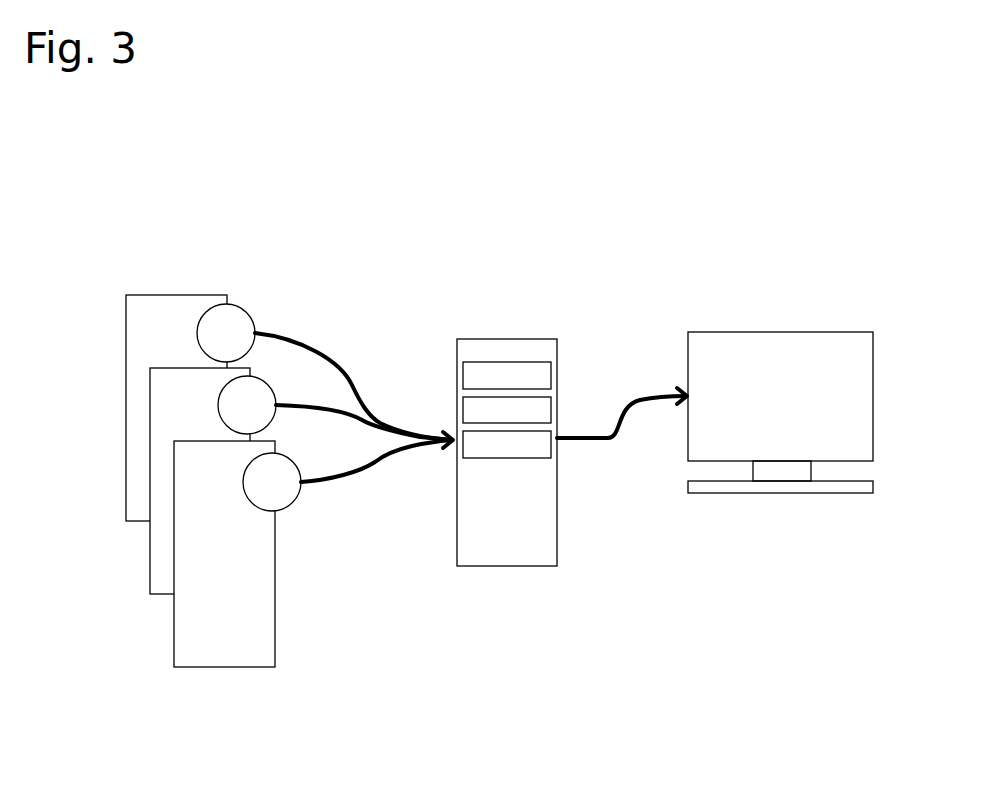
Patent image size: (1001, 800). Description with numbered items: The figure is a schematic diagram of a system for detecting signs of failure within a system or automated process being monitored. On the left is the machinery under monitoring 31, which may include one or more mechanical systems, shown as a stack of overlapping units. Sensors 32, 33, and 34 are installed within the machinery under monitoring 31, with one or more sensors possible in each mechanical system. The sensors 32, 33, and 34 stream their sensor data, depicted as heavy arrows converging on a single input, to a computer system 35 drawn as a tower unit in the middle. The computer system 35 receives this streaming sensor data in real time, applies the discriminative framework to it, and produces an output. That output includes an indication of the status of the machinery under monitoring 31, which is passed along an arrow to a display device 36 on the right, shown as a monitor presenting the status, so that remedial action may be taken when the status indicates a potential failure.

The machinery under monitoring 31 is at (267, 652).
The sensor 32 is at (287, 500).
The sensor 33 is at (267, 417).
The sensor 34 is at (243, 345).
The computer system 35 is at (550, 554).
The display device 36 is at (868, 448).